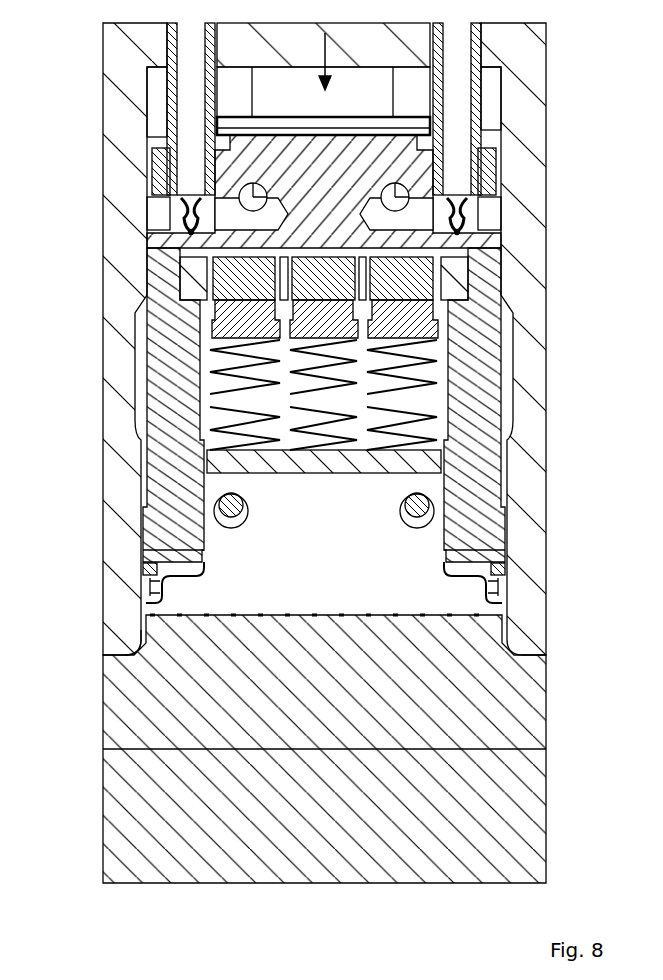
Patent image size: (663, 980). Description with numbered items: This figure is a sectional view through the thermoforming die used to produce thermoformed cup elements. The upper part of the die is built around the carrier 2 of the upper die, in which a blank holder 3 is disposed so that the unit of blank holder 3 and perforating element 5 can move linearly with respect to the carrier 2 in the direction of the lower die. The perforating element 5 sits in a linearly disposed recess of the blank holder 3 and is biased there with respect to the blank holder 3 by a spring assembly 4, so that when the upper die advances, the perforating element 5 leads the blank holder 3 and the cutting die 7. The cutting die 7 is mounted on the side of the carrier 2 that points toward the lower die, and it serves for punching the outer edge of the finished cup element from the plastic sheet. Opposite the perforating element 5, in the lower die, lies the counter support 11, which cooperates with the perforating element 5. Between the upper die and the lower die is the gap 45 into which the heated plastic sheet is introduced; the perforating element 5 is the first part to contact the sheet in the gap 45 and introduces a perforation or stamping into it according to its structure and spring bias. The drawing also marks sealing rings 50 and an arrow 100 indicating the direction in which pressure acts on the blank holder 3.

The carrier of the upper die 2 is at (527, 181).
The blank holder 3 is at (180, 453).
The spring assembly 4 is at (243, 400).
The perforating element 5 is at (415, 578).
The cutting die 7 is at (125, 590).
The counter support 11 is at (418, 722).
The gap 45 is at (118, 631).
The O-ring 50 is at (237, 522).
The pressure medium direction 100 is at (327, 62).